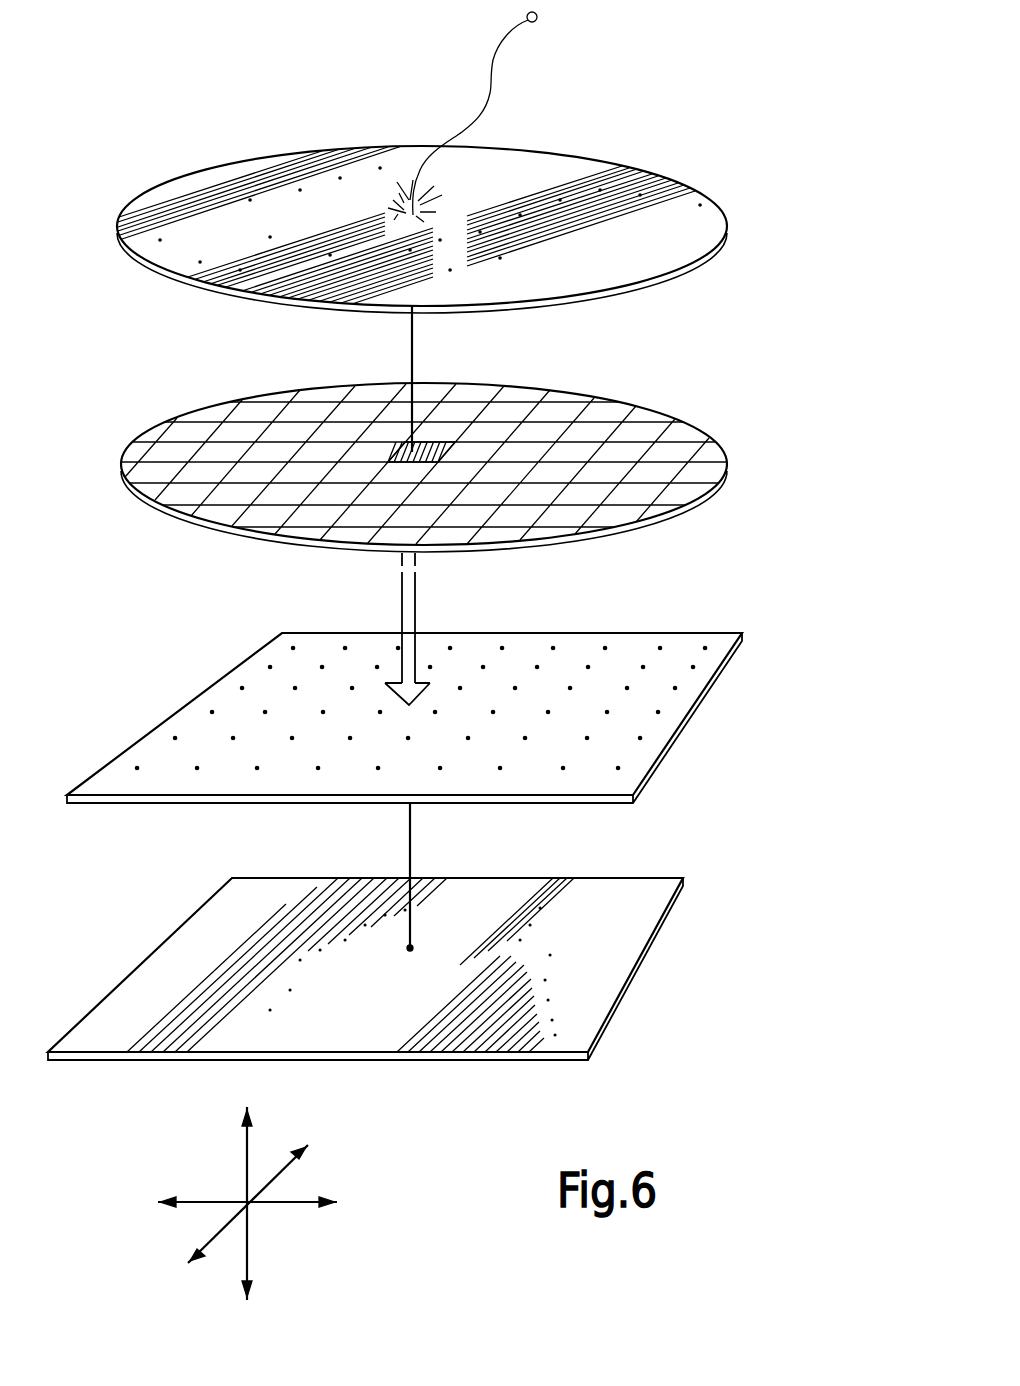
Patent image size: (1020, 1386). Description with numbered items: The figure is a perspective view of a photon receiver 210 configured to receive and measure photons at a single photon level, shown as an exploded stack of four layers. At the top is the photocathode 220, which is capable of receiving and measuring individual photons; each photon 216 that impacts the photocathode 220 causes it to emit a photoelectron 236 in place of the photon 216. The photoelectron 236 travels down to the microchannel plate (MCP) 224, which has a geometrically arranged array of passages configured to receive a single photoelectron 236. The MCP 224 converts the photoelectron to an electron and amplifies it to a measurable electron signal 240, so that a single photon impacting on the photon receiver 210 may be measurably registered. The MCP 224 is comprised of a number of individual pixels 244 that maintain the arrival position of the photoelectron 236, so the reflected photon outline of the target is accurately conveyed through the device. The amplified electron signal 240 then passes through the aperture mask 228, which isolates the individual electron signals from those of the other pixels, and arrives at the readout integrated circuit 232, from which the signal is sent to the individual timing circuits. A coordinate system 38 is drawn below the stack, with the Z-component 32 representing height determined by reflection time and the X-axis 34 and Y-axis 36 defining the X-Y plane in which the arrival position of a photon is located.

The photon receiver 210 is at (643, 128).
The photon 216 is at (537, 16).
The photocathode 220 is at (260, 176).
The microchannel plate (MCP) 224 is at (220, 398).
The aperture mask 228 is at (222, 675).
The readout integrated circuit 232 is at (180, 931).
The photoelectron 236 is at (477, 340).
The electron signal 240 is at (440, 618).
The pixel 244 is at (432, 447).
The coordinate system 38 is at (207, 1132).
The Z-component 32 is at (247, 1157).
The X-axis 34 is at (284, 1203).
The Y-axis 36 is at (283, 1172).